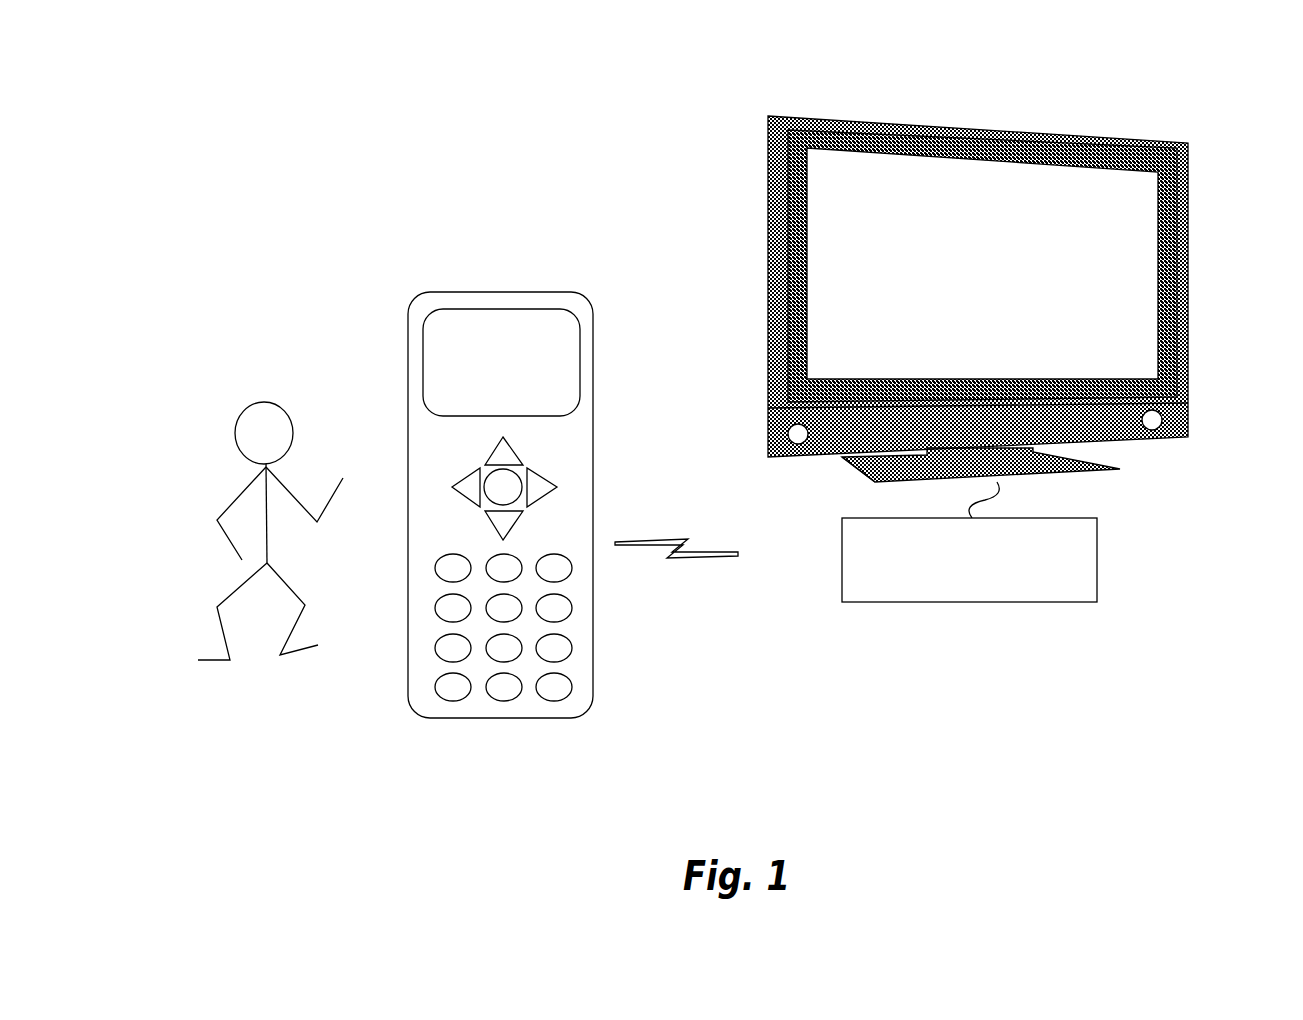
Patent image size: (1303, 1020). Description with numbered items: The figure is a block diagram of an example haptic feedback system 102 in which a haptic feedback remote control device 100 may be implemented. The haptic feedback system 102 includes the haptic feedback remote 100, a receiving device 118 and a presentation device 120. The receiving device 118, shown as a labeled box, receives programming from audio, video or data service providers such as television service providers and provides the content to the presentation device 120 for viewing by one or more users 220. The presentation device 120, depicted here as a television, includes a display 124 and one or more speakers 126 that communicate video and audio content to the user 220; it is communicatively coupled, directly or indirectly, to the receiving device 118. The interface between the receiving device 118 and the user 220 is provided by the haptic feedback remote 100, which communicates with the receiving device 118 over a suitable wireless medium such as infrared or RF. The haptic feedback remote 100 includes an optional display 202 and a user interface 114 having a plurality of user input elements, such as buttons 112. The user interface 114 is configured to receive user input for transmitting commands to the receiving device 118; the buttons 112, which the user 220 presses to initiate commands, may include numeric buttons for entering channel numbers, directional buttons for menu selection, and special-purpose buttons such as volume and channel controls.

The haptic feedback system 102 is at (308, 84).
The haptic feedback remote control device 100 is at (533, 292).
The display 202 is at (580, 347).
The user interface 114 is at (570, 533).
The buttons 112 is at (448, 648).
The user 220 is at (275, 402).
The presentation device 120 is at (1135, 142).
The display 124 is at (982, 263).
The speakers 126 is at (1158, 420).
The receiving device 118 is at (1097, 545).